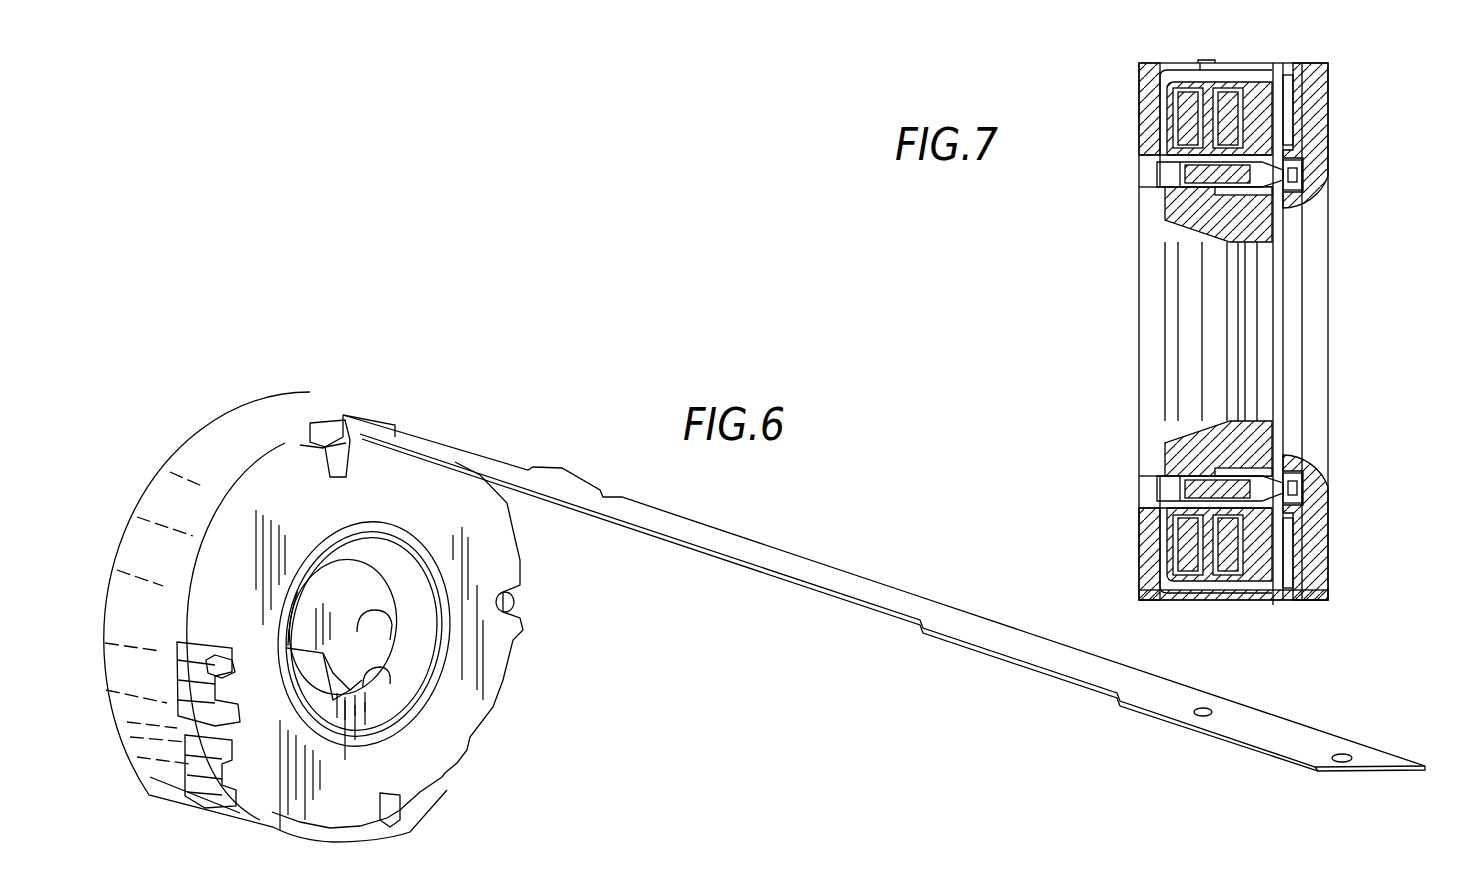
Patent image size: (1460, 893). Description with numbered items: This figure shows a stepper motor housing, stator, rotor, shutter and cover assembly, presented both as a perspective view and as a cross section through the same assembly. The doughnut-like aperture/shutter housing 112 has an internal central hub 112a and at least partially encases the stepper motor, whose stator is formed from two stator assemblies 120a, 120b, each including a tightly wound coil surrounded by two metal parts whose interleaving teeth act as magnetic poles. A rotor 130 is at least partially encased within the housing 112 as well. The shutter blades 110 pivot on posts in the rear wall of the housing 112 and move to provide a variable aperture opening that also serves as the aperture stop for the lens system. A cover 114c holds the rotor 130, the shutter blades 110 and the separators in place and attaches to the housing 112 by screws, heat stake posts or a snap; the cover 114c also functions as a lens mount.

In FIG. 6, the blades 110 is at (360, 652).
In FIG. 7, the blades 110 is at (1283, 407).
In FIG. 6, the aperture/shutter housing 112 is at (393, 397).
In FIG. 7, the aperture/shutter housing 112 is at (1330, 50).
In FIG. 7, the internal central hub 112a is at (1190, 200).
In FIG. 6, the cover 114c is at (392, 478).
In FIG. 7, the cover 114c is at (1317, 118).
In FIG. 7, the stator assembly 120a is at (1184, 118).
In FIG. 7, the stator assembly 120b is at (1230, 108).
In FIG. 7, the rotor 130 is at (1297, 174).